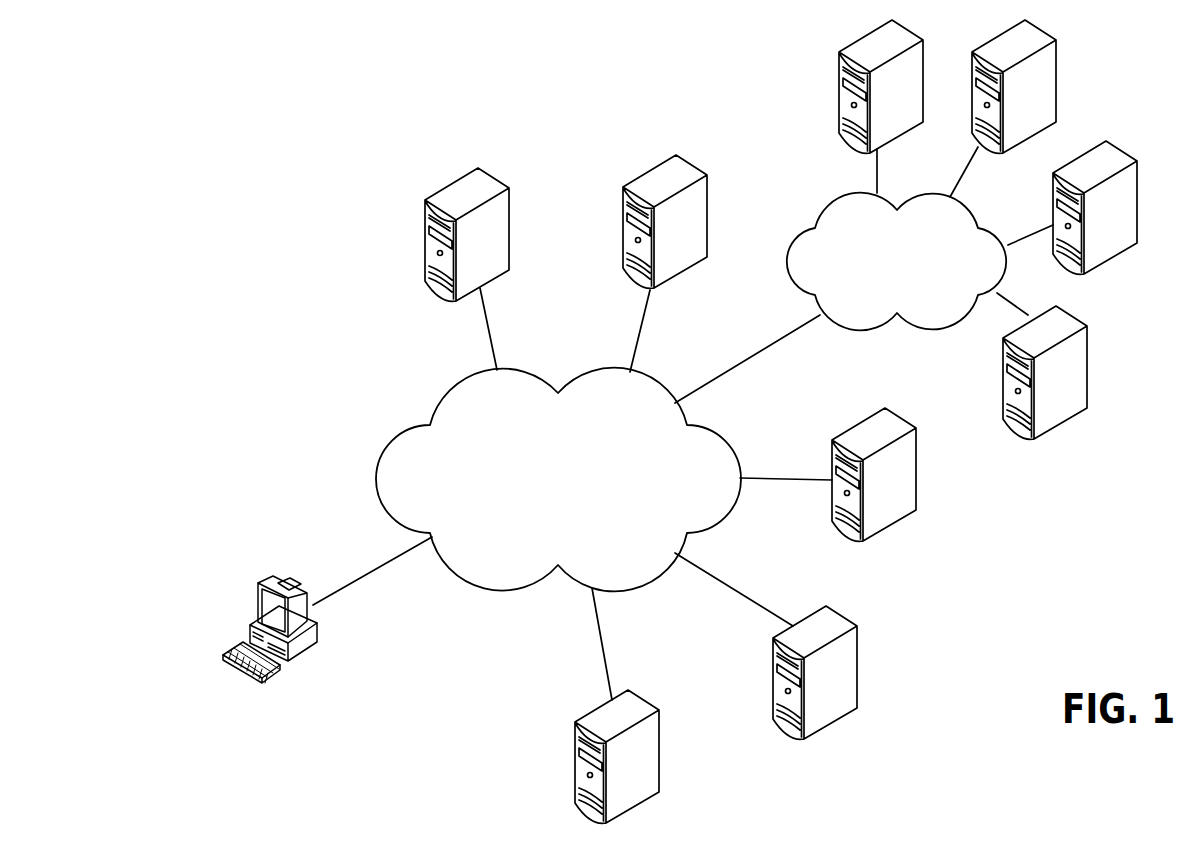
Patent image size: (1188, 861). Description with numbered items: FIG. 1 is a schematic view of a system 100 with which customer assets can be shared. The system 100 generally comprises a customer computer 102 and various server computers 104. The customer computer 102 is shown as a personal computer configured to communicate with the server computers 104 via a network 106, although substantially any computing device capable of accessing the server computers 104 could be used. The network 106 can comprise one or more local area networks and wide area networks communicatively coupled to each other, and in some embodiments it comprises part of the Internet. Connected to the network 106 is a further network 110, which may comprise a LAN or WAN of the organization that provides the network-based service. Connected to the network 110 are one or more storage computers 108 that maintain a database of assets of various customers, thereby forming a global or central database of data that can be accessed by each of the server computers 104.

The system 100 is at (242, 152).
The customer computer 102 is at (307, 643).
The server computers 104 is at (498, 212).
The network 106 is at (577, 505).
The storage computers 108 is at (897, 120).
The further network 110 is at (879, 288).